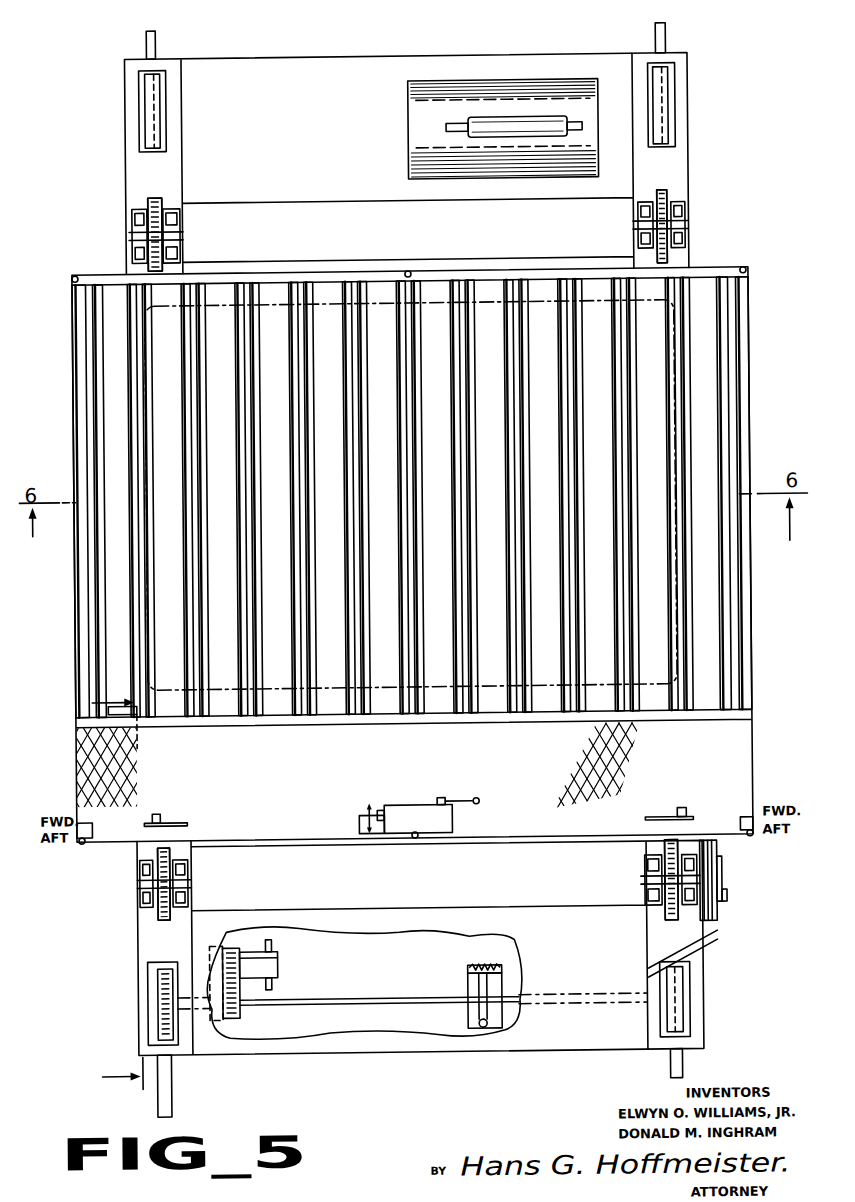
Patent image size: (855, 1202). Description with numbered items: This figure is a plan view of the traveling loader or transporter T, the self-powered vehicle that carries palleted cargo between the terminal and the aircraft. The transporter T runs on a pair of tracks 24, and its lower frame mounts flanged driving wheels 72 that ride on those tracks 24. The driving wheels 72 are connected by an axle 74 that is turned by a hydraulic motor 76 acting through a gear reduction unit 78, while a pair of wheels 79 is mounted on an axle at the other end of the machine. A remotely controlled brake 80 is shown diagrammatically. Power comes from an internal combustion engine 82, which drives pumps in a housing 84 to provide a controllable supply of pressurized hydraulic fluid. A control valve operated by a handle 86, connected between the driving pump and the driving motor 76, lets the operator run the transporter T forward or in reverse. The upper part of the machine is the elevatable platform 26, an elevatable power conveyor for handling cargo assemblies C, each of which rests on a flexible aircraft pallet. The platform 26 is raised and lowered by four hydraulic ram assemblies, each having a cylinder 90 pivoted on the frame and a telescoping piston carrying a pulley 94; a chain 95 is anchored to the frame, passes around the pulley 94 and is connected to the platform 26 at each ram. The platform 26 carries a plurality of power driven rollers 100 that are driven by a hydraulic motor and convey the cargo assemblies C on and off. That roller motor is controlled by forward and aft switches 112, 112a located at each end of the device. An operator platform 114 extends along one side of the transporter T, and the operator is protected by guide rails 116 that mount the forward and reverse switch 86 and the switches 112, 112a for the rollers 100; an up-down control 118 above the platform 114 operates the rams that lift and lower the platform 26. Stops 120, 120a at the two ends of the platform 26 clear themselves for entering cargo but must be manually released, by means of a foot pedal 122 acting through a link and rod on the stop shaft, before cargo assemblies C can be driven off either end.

The tracks 24 is at (160, 39).
The elevatable platform 26 is at (109, 262).
The driving wheels 72 is at (158, 1017).
The axle 74 is at (330, 996).
The hydraulic motor 76 is at (268, 962).
The gear reduction unit 78 is at (238, 1006).
The wheels 79 is at (149, 96).
The brake 80 is at (470, 1011).
The internal combustion engine 82 is at (484, 90).
The housing 84 is at (316, 133).
The handle 86 is at (376, 812).
The cylinder 90 is at (181, 208).
The pulley 94 is at (165, 202).
The chain 95 is at (158, 192).
The power driven rollers 100 is at (255, 566).
The forward switch 112 is at (90, 823).
The aft switch 112a is at (738, 824).
The operator platform 114 is at (535, 765).
The guide rails 116 is at (412, 270).
The up-down control 118 is at (455, 800).
The stop 120 is at (115, 608).
The stop 120a is at (705, 597).
The foot pedal 122 is at (152, 811).
The transporter T is at (118, 172).
The cargo assembly C is at (327, 292).